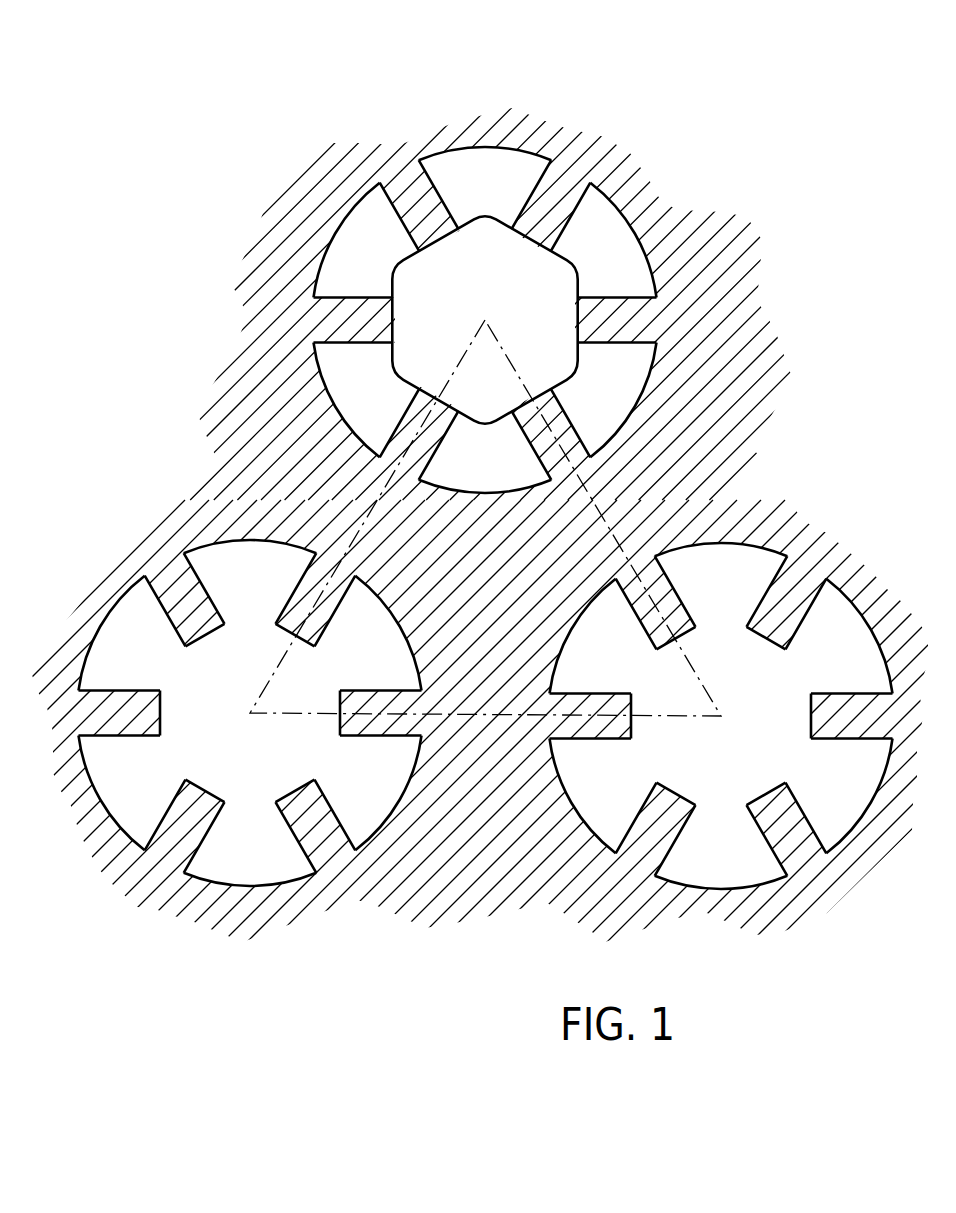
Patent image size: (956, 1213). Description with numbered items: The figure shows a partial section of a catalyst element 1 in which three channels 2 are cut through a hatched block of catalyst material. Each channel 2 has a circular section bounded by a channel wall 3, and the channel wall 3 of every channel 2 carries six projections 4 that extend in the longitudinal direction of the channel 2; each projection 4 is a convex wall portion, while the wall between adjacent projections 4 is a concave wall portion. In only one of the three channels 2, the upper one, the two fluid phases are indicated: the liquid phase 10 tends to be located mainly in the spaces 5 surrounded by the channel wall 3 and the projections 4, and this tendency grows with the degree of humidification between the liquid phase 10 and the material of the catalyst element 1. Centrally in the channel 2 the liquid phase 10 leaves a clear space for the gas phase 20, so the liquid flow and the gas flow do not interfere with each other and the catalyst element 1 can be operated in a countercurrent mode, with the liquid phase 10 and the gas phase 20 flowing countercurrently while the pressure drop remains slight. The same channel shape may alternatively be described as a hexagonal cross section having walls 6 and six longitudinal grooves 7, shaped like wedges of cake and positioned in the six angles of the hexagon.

The catalyst element 1 is at (565, 86).
The liquid phase 10 is at (615, 228).
The gas phase 20 is at (557, 332).
The channel 2 is at (738, 757).
The channel wall 3 is at (860, 620).
The projection 4 is at (805, 717).
The space 5 is at (858, 802).
The wall 6 is at (160, 702).
The groove 7 is at (144, 787).